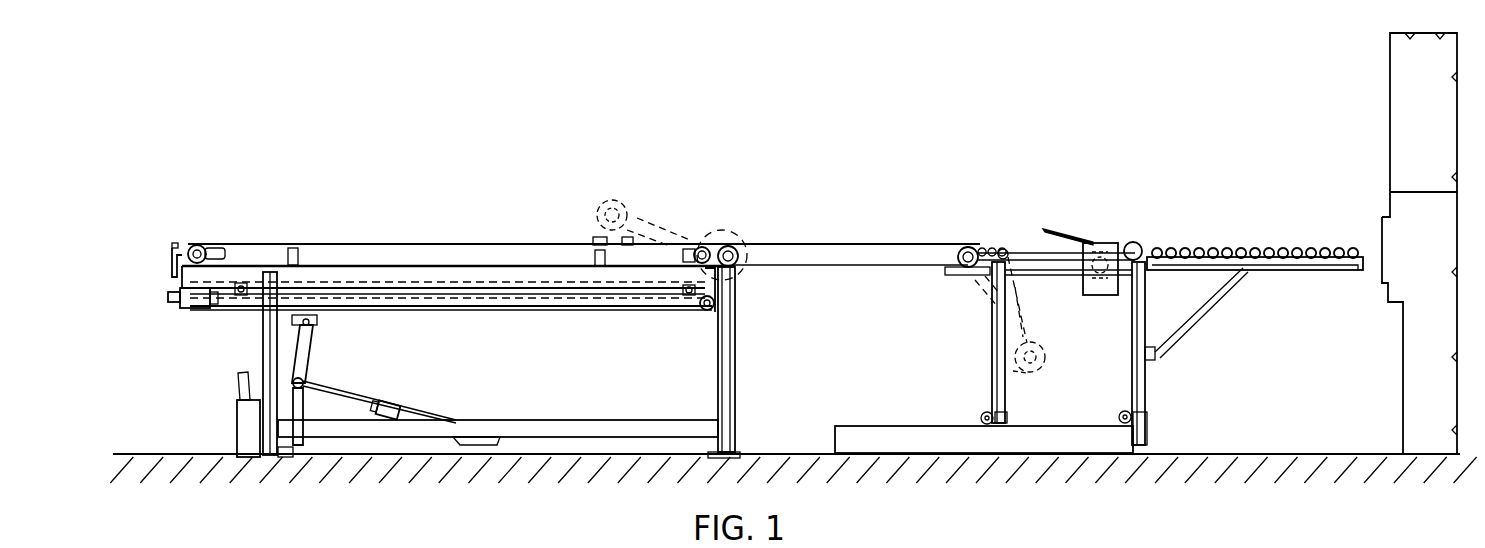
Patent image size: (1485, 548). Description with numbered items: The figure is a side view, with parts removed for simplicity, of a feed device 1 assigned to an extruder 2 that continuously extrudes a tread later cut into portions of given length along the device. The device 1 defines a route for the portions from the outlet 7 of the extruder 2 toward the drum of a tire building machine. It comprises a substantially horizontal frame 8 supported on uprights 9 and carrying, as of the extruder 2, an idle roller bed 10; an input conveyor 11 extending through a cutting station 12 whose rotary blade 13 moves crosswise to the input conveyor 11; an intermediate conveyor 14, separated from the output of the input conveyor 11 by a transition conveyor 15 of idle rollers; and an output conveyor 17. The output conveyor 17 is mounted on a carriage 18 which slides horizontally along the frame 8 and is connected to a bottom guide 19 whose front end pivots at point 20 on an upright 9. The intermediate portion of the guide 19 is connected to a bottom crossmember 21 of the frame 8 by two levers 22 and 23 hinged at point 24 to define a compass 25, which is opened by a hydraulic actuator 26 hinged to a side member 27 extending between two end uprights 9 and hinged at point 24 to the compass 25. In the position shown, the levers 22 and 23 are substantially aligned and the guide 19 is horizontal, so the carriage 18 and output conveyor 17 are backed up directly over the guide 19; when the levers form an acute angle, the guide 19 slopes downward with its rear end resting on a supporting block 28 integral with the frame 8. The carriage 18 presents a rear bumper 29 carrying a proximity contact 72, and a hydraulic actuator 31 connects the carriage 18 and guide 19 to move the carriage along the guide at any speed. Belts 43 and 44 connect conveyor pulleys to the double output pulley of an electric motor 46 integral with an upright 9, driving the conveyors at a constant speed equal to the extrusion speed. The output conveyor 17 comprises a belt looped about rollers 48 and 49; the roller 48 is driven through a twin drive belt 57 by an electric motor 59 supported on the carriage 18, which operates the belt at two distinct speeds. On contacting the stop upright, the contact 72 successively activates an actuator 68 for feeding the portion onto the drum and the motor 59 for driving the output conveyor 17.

The feed device 1 is at (827, 173).
The extruder 2 is at (1398, 105).
The outlet 7 is at (1382, 224).
The frame 8 is at (793, 312).
The uprights 9 is at (267, 460).
The idle roller bed 10 is at (1242, 236).
The input conveyor 11 is at (1025, 240).
The cutting station 12 is at (1087, 222).
The rotary blade 13 is at (1045, 228).
The intermediate conveyor 14 is at (838, 235).
The transition conveyor 15 is at (980, 240).
The output conveyor 17 is at (425, 233).
The carriage 18 is at (242, 272).
The bottom guide 19 is at (455, 308).
The pivot point 20 is at (713, 315).
The bottom crossmember 21 is at (282, 455).
The lever 22 is at (303, 343).
The lever 23 is at (303, 403).
The hinge point 24 is at (303, 383).
The compass 25 is at (314, 366).
The hydraulic actuator 26 is at (413, 398).
The side member 27 is at (513, 425).
The supporting block 28 is at (242, 438).
The rear bumper 29 is at (195, 300).
The hydraulic actuator 31 is at (522, 292).
The belt 43 is at (1030, 322).
The belt 44 is at (992, 288).
The electric motor 46 is at (1040, 363).
The roller 48 is at (697, 243).
The roller 49 is at (200, 250).
The twin drive belt 57 is at (663, 227).
The electric motor 59 is at (613, 196).
The actuator 68 is at (172, 262).
The proximity contact 72 is at (170, 303).